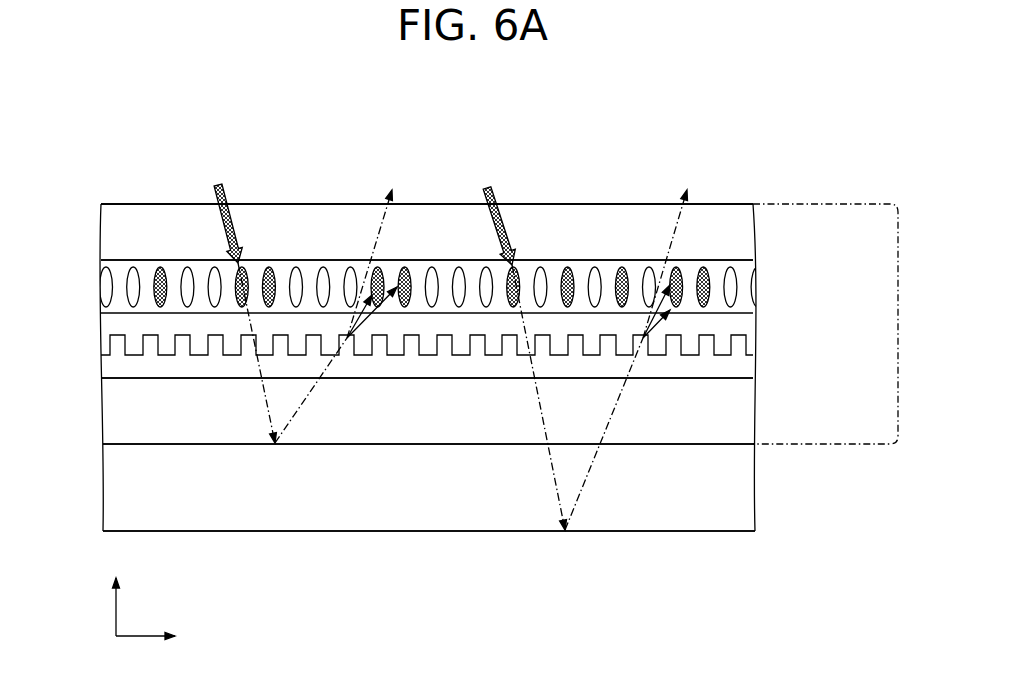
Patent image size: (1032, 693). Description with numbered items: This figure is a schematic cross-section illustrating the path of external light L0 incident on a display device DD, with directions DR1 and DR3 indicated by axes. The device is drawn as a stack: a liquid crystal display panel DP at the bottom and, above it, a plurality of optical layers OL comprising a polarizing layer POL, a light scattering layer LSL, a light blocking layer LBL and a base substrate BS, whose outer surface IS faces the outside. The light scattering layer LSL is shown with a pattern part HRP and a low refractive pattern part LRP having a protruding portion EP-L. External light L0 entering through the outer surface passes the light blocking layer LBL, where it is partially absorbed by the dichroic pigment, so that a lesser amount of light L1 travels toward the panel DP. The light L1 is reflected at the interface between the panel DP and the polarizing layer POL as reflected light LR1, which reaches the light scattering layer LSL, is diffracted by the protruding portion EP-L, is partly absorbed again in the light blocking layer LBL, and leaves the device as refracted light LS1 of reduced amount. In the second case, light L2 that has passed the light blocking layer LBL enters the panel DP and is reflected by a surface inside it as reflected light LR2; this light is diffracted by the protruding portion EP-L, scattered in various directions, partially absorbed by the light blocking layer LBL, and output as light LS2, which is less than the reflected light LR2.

The display device DD is at (782, 150).
The input surface IS is at (142, 200).
The base substrate BS is at (742, 232).
The light blocking layer LBL is at (432, 286).
The high refractive pattern HRP is at (426, 337).
The low refractive pattern part LRP is at (745, 367).
The light scattering layer LSL is at (454, 350).
The protruding portion EP-L is at (110, 344).
The polarizing layer POL is at (745, 418).
The plurality of optical layers OL is at (898, 204).
The liquid crystal display panel DP is at (738, 490).
The external light L0 is at (361, 211).
The light L1 is at (257, 353).
The reflected light LR1 is at (311, 390).
The refracted light LS1 is at (377, 247).
The light L2 is at (539, 397).
The reflected light LR2 is at (604, 434).
The output light LS2 is at (672, 247).
The first direction DR1 is at (167, 636).
The third direction DR3 is at (117, 595).